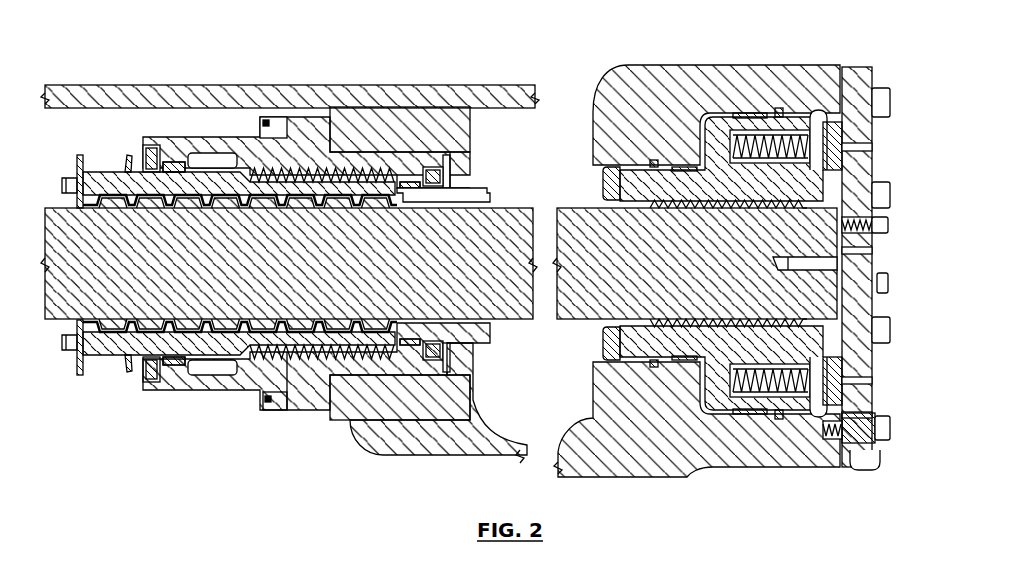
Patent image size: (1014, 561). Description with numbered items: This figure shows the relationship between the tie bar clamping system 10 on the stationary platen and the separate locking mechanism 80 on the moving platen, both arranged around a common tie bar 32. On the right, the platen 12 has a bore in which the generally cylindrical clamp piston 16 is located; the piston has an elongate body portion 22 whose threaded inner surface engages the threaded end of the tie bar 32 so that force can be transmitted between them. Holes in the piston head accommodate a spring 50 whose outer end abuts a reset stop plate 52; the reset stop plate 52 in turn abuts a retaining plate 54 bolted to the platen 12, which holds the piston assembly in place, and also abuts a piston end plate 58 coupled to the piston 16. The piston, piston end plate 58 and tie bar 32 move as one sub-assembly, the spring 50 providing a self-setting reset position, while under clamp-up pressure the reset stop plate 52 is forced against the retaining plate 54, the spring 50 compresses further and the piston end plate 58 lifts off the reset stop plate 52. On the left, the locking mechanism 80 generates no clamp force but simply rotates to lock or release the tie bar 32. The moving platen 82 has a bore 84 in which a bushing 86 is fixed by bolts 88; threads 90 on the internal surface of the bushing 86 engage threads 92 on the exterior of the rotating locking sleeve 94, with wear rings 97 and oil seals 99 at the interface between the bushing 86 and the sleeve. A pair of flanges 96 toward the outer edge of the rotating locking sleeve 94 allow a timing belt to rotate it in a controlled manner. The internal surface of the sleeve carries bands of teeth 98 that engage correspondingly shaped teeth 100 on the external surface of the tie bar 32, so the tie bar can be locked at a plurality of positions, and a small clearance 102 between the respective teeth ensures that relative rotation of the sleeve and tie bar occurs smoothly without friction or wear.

The tie bar clamping system 10 is at (656, 52).
The platen 12 is at (628, 455).
The clamp piston 16 is at (720, 122).
The body portion 22 is at (622, 372).
The tie bar 32 is at (578, 216).
The spring 50 is at (780, 128).
The reset stop plate 52 is at (830, 122).
The retaining plate 54 is at (858, 68).
The piston end plate 58 is at (858, 358).
The locking mechanism 80 is at (106, 75).
The moving platen 82 is at (403, 422).
The bore 84 is at (278, 110).
The bushing 86 is at (175, 387).
The bolts 88 is at (262, 125).
The threads 90 is at (310, 358).
The threads 92 is at (287, 358).
The rotating locking sleeve 94 is at (105, 178).
The flanges 96 is at (127, 372).
The wear rings 97 is at (172, 162).
The teeth 98 is at (198, 333).
The oil seals 99 is at (150, 148).
The teeth 100 is at (160, 327).
The clearance 102 is at (410, 190).